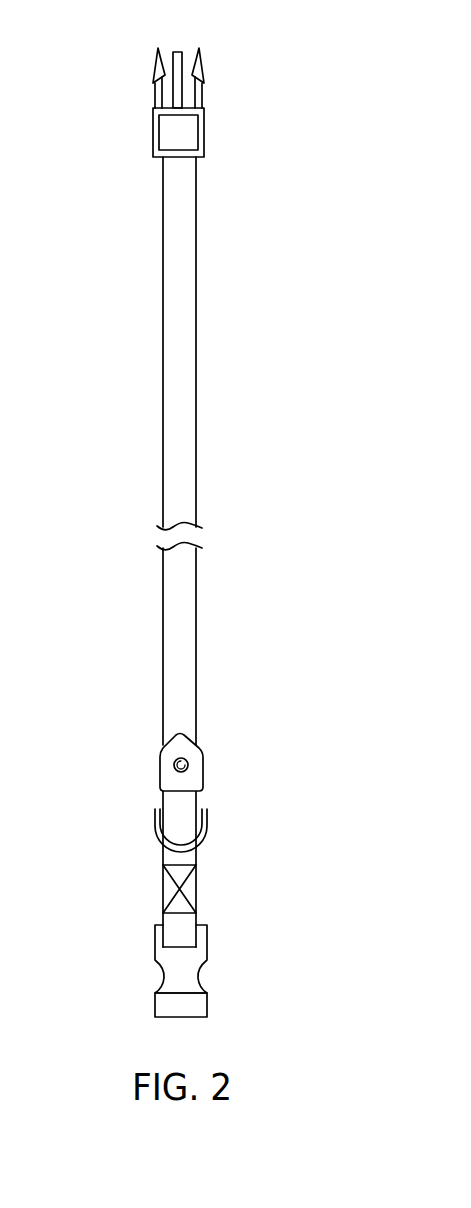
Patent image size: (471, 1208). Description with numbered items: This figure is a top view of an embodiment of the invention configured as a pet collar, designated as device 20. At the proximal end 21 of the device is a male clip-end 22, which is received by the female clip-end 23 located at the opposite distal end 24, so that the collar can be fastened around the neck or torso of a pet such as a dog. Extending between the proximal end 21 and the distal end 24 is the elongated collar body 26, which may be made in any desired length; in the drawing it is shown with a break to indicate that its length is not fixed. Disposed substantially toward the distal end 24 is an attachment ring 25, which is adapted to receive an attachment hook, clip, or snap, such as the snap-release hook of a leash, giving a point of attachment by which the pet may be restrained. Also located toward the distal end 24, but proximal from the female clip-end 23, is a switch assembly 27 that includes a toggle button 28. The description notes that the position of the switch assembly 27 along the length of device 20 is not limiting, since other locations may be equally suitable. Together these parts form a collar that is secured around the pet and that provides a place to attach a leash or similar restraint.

The device 20 is at (340, 128).
The proximal end 21 is at (130, 90).
The male clip-end 22 is at (207, 78).
The female clip-end 23 is at (208, 1002).
The distal end 24 is at (125, 928).
The attachment ring 25 is at (208, 828).
The elongated collar body 26 is at (187, 463).
The switch assembly 27 is at (203, 760).
The toggle button 28 is at (172, 764).